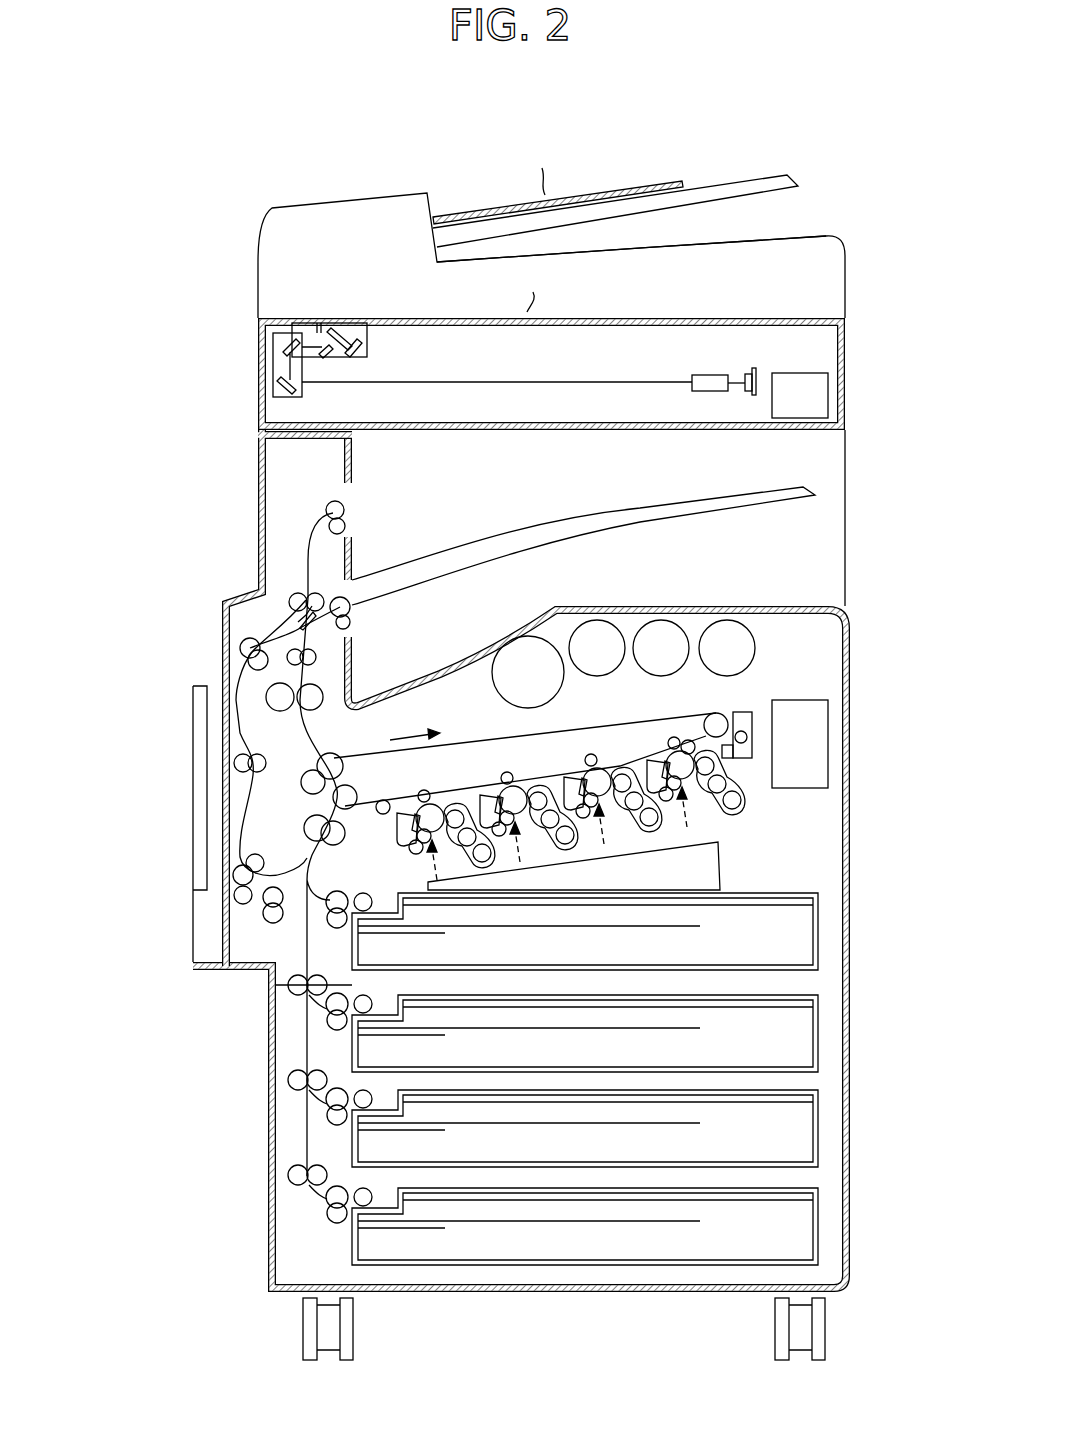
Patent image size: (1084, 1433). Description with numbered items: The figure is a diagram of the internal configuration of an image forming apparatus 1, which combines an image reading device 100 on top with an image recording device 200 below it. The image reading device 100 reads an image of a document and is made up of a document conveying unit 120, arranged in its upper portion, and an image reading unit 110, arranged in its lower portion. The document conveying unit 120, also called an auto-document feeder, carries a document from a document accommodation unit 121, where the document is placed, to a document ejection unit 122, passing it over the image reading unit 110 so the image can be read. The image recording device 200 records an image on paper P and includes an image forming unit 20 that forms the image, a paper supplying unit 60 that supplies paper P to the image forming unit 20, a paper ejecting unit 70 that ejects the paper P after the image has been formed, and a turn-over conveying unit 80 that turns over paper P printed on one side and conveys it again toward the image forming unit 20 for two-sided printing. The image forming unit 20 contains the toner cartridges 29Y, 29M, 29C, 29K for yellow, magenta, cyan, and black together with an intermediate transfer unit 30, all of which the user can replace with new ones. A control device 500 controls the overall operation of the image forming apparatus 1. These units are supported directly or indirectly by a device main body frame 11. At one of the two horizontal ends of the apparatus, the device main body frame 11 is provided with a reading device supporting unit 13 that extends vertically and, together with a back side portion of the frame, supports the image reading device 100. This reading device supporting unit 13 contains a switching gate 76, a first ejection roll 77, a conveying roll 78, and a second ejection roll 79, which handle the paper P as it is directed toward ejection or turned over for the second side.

The image forming apparatus 1 is at (201, 173).
The image reading device 100 is at (138, 258).
The image reading unit 110 is at (248, 394).
The document conveying unit 120 is at (248, 278).
The document accommodation unit 121 is at (728, 185).
The document ejection unit 122 is at (612, 243).
The image recording device 200 is at (248, 491).
The device main body frame 11 is at (848, 655).
The reading device supporting unit 13 is at (258, 452).
The paper ejecting unit 70 is at (485, 671).
The second ejection roll 79 is at (335, 508).
The first ejection roll 77 is at (347, 604).
The conveying roll 78 is at (300, 600).
The switching gate 76 is at (298, 622).
The turn-over conveying unit 80 is at (241, 797).
The paper supplying unit 60 is at (304, 1220).
The paper P is at (797, 890).
The control device 500 is at (830, 712).
The image forming unit 20 is at (600, 727).
The toner cartridge 29K is at (526, 648).
The toner cartridge 29C is at (598, 630).
The toner cartridge 29M is at (663, 630).
The toner cartridge 29Y is at (729, 630).
The intermediate transfer unit 30 is at (469, 741).